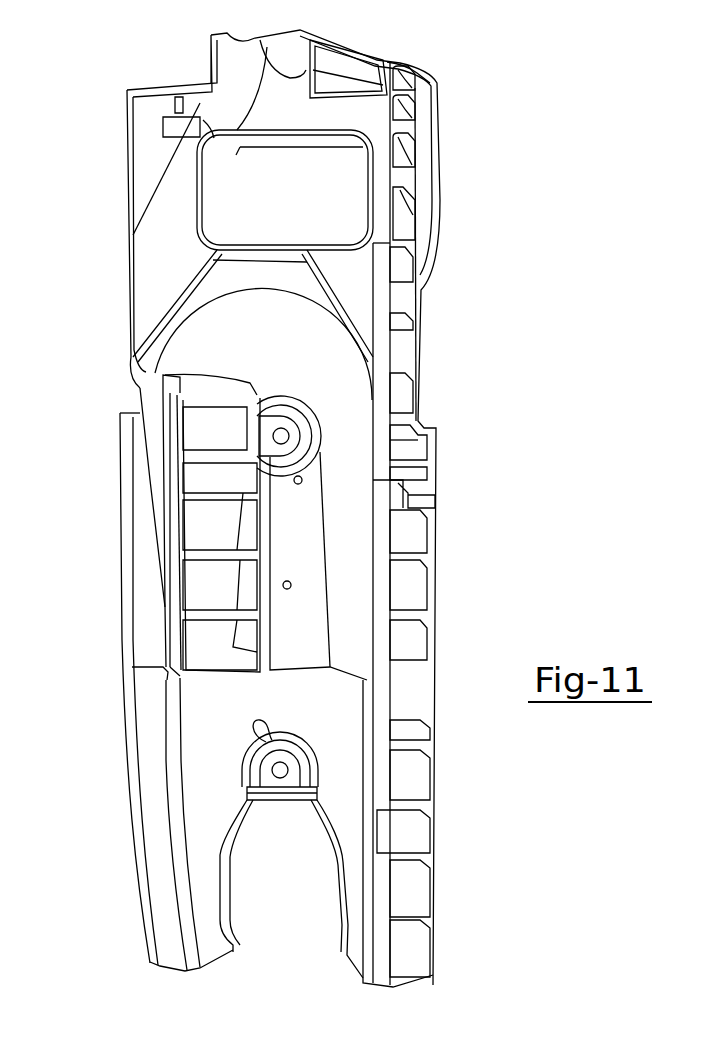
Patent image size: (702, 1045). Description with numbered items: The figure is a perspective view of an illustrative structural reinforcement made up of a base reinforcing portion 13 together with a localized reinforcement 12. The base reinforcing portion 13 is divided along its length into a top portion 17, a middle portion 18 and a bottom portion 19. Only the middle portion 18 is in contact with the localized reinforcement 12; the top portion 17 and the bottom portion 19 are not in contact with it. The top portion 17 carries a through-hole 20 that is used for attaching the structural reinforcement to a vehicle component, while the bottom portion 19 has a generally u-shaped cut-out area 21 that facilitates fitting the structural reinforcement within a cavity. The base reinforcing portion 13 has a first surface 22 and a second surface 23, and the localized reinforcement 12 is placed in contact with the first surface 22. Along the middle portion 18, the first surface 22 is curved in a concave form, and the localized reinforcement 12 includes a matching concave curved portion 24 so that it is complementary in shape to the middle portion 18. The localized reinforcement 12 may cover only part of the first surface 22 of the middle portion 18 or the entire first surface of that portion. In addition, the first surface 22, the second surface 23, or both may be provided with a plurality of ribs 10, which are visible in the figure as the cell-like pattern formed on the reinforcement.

The ribs 10 is at (210, 500).
The localized reinforcement 12 is at (347, 415).
The base reinforcing portion 13 is at (420, 302).
The top portion 17 is at (127, 183).
The middle portion 18 is at (120, 480).
The bottom portion 19 is at (123, 807).
The through-hole 20 is at (350, 195).
The u-shaped cut-out area 21 is at (287, 910).
The first surface 22 is at (347, 602).
The second surface 23 is at (108, 610).
The concave curved portion 24 is at (330, 350).